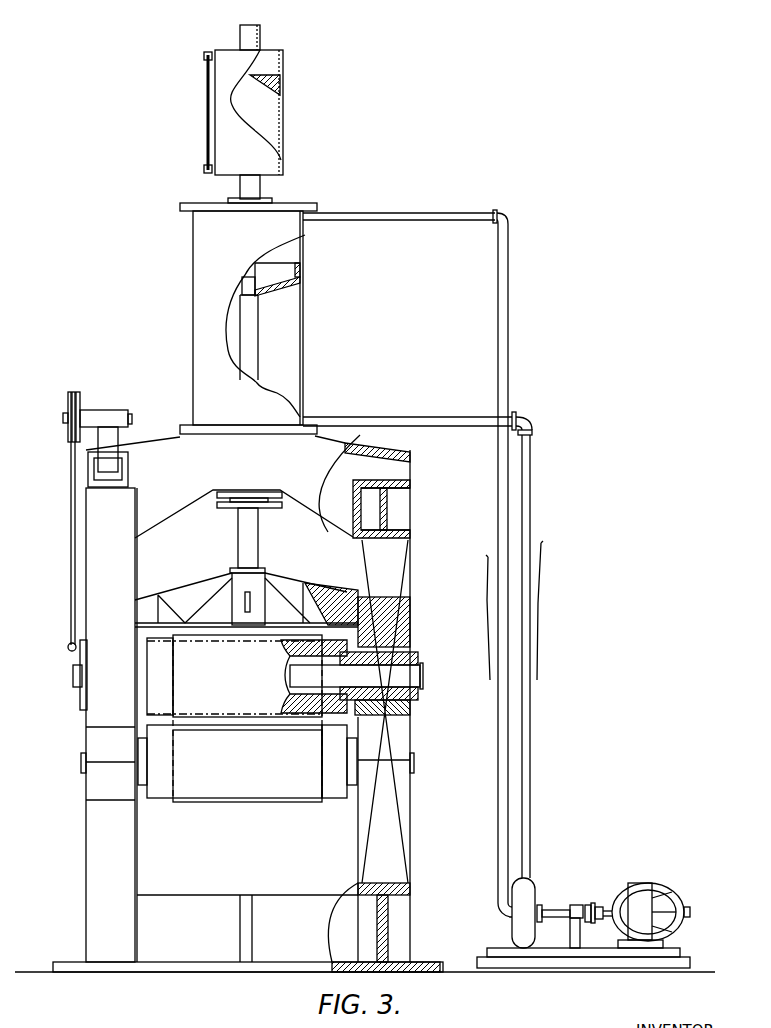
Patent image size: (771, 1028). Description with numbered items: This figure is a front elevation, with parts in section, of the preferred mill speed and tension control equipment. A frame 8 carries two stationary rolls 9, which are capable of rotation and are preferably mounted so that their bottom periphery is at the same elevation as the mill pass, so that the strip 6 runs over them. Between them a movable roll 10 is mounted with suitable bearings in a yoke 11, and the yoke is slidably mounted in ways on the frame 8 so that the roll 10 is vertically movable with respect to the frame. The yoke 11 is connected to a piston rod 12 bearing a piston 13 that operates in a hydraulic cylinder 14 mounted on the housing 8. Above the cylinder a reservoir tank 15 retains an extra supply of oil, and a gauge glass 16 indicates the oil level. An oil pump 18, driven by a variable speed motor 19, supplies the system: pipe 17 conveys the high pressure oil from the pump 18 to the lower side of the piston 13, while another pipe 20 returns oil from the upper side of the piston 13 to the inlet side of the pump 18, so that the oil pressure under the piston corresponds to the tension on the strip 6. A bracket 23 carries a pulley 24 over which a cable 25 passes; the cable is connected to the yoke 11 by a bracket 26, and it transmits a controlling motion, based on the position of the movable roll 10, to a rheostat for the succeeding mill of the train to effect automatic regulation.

The strip 6 is at (288, 800).
The frame 8 is at (248, 703).
The stationary rolls 9 is at (335, 800).
The movable roll 10 is at (165, 717).
The yoke 11 is at (241, 598).
The piston rod 12 is at (258, 548).
The piston 13 is at (283, 292).
The hydraulic cylinder 14 is at (322, 344).
The reservoir tank 15 is at (283, 165).
The gauge glass 16 is at (206, 100).
The pipe 17 is at (415, 417).
The oil pump 18 is at (528, 903).
The variable speed motor 19 is at (640, 892).
The pipe 20 is at (498, 522).
The bracket 23 is at (110, 414).
The pulley 24 is at (80, 398).
The cable 25 is at (422, 212).
The bracket 26 is at (68, 648).